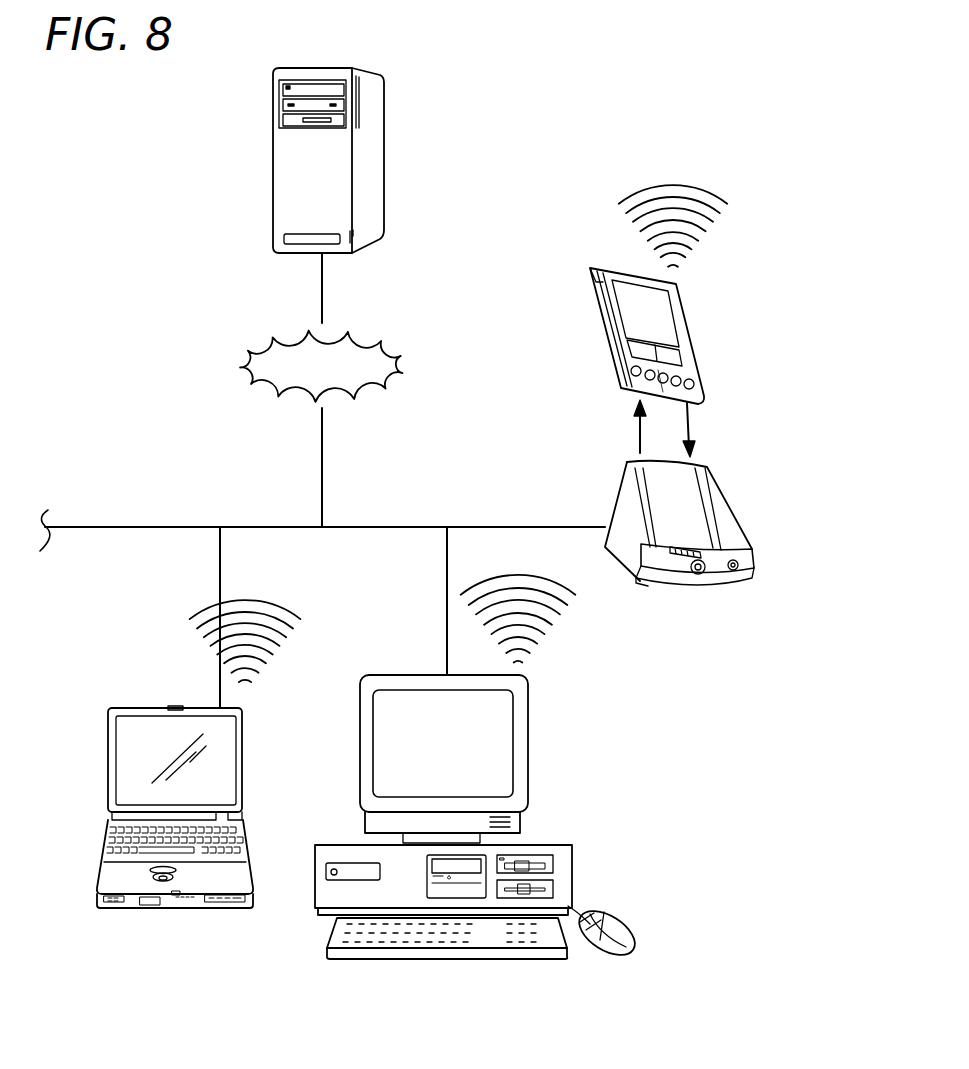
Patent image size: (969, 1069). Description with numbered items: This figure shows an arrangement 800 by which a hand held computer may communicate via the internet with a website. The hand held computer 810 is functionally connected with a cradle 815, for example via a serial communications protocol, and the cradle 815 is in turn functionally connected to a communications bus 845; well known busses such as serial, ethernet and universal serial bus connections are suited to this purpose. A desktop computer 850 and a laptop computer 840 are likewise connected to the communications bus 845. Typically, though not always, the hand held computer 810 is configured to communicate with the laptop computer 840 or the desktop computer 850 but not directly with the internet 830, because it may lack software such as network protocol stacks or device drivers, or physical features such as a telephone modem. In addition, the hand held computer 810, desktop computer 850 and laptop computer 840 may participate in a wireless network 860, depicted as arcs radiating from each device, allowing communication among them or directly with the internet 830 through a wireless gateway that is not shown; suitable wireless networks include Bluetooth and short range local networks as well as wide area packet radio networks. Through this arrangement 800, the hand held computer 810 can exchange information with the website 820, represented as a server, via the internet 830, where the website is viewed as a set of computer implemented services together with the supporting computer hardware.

The arrangement 800 is at (119, 111).
The hand held computer 810 is at (600, 323).
The cradle 815 is at (700, 590).
The website 820 is at (378, 140).
The internet 830 is at (238, 366).
The laptop computer 840 is at (108, 748).
The communications bus 845 is at (120, 527).
The desktop computer 850 is at (528, 740).
The wireless network 860 is at (636, 226).